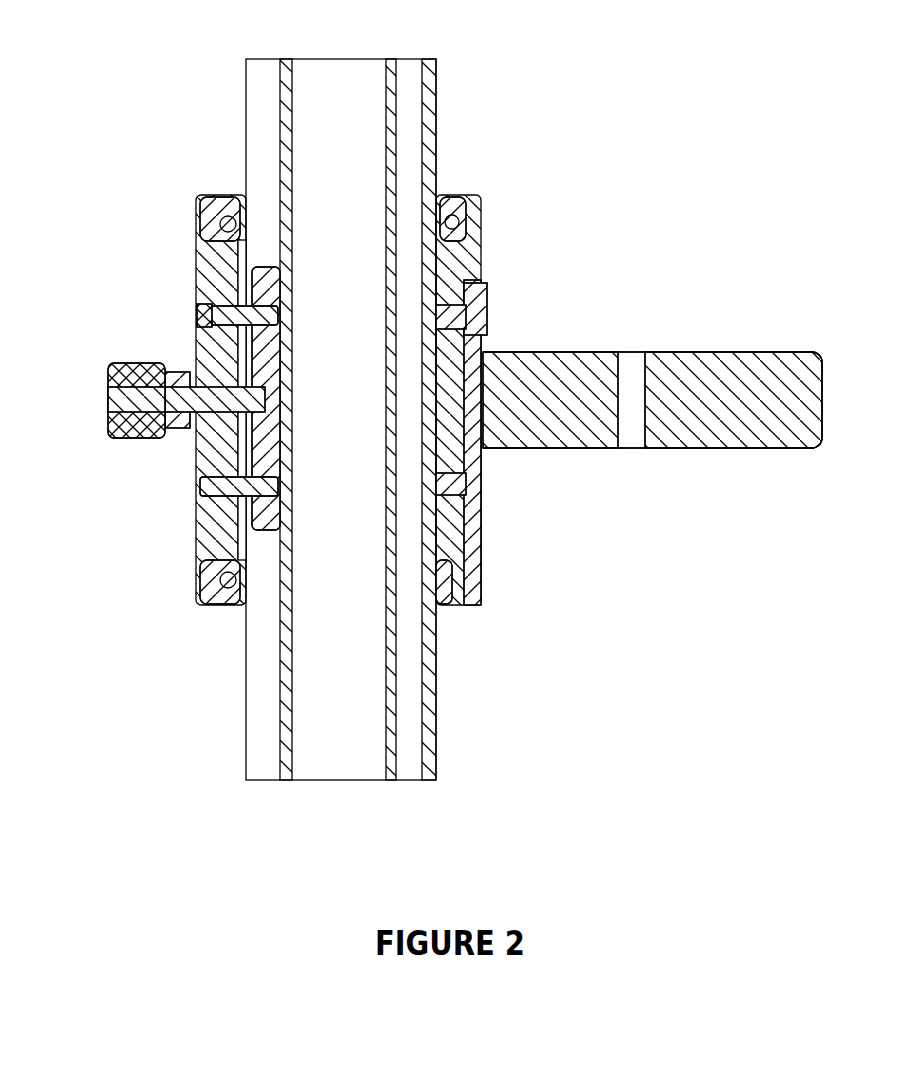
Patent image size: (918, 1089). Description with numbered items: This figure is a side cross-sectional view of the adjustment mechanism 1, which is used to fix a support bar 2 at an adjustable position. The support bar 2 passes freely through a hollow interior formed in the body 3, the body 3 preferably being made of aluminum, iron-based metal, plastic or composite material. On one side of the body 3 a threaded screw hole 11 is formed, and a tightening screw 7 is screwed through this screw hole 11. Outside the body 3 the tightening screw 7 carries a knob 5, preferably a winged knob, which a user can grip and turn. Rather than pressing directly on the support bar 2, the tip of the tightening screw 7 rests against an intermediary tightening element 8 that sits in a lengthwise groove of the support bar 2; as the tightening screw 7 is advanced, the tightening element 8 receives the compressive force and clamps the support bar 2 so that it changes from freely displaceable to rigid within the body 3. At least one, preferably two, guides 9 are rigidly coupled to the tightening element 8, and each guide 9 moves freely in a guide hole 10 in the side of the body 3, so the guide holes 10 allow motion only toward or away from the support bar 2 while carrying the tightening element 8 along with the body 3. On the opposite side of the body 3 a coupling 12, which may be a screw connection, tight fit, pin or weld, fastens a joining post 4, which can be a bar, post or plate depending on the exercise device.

The adjustment mechanism 1 is at (437, 403).
The support bar 2 is at (267, 183).
The body 3 is at (213, 235).
The joining post 4 is at (537, 397).
The knob 5 is at (105, 395).
The tightening screw 7 is at (172, 423).
The tightening element 8 is at (292, 562).
The guide 9 is at (233, 320).
The guide hole 10 is at (192, 320).
The screw hole 11 is at (207, 500).
The coupling 12 is at (490, 320).